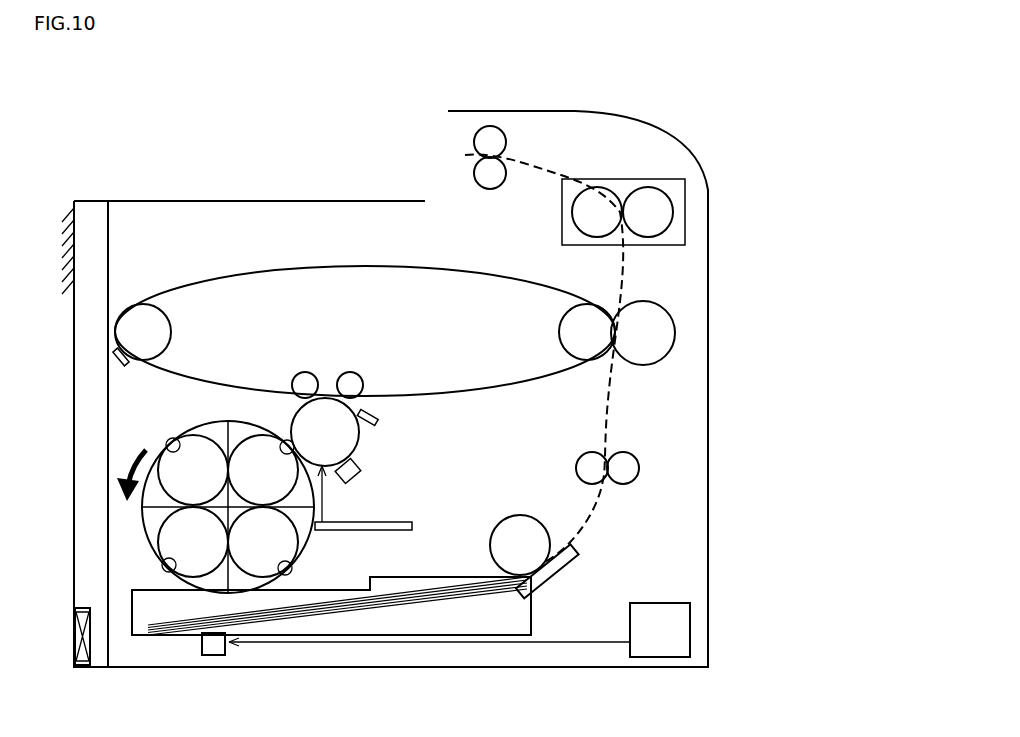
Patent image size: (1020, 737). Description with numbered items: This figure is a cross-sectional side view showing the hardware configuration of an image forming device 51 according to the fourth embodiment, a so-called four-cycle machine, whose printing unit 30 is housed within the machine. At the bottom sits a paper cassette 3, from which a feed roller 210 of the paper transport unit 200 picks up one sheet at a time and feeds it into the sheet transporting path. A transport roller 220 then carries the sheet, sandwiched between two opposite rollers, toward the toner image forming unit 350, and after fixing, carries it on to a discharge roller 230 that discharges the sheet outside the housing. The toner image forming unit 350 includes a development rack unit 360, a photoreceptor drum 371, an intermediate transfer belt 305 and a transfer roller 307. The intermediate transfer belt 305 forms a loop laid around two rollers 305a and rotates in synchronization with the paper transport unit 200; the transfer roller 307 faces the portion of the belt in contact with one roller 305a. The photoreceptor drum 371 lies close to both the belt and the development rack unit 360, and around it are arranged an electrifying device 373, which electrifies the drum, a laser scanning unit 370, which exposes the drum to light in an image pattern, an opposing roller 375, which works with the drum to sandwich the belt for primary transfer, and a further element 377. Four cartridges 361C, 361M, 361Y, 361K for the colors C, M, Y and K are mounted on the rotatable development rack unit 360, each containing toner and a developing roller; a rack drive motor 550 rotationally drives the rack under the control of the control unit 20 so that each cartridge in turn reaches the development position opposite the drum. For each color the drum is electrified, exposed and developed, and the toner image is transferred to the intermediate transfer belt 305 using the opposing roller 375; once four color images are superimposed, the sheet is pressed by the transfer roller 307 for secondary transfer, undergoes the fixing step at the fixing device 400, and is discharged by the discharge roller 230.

The image forming device 51 is at (133, 191).
The printing unit 30 is at (120, 439).
The intermediate transfer belt 305 is at (253, 267).
The rollers 305a is at (137, 317).
The transfer roller 307 is at (641, 366).
The opposing roller 375 is at (351, 378).
The photoreceptor drum 371 is at (325, 432).
The charging blade 377 is at (377, 418).
The electrifying device 373 is at (350, 480).
The laser scanning unit 370 is at (340, 532).
The toner image forming unit 350 is at (436, 452).
The development rack unit 360 is at (177, 428).
The cartridge 361Y is at (193, 470).
The cartridge 361M is at (263, 470).
The cartridge 361K is at (193, 542).
The cartridge 361C is at (263, 542).
The paper cassette 3 is at (531, 610).
The rack drive motor 550 is at (211, 656).
The control unit 20 is at (680, 635).
The fixing device 400 is at (561, 215).
The paper transport unit 200 is at (660, 362).
The discharge roller 230 is at (508, 140).
The transport roller 220 is at (640, 455).
The feed roller 210 is at (550, 540).